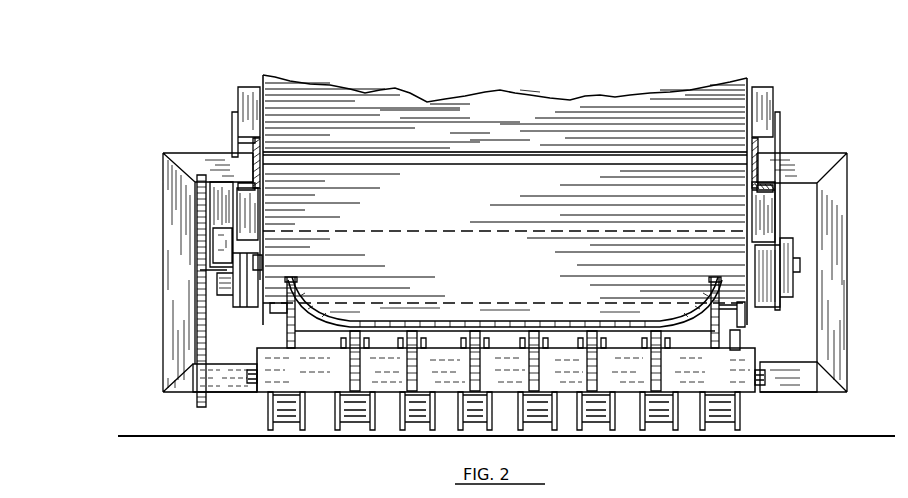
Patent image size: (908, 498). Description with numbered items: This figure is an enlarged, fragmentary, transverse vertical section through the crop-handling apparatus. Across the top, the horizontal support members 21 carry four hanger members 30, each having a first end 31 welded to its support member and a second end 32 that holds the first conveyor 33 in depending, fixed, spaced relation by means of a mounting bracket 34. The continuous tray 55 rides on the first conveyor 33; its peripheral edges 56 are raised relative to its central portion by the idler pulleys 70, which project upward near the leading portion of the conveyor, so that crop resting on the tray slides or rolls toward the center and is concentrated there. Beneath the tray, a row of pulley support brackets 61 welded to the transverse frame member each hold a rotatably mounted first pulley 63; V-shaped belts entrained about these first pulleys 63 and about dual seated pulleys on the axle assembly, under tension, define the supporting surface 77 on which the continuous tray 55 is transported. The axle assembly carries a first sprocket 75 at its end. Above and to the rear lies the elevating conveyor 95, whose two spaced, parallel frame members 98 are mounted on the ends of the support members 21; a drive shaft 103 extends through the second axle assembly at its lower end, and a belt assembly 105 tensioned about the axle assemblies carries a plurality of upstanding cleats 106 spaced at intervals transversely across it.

The support member 21 is at (260, 142).
The hanger member 30 is at (172, 222).
The first end 31 is at (230, 160).
The second end 32 is at (190, 383).
The first conveyor 33 is at (424, 300).
The mounting bracket 34 is at (253, 385).
The continuous tray 55 is at (455, 322).
The peripheral edges 56 is at (298, 293).
The pulley support bracket 61 is at (307, 413).
The first pulley 63 is at (354, 342).
The idler pulley 70 is at (285, 305).
The first sprocket 75 is at (215, 358).
The supporting surface 77 is at (503, 323).
The elevating conveyor 95 is at (572, 96).
The frame member 98 is at (247, 108).
The drive shaft 103 is at (800, 265).
The belt assembly 105 is at (528, 123).
The cleats 106 is at (422, 155).